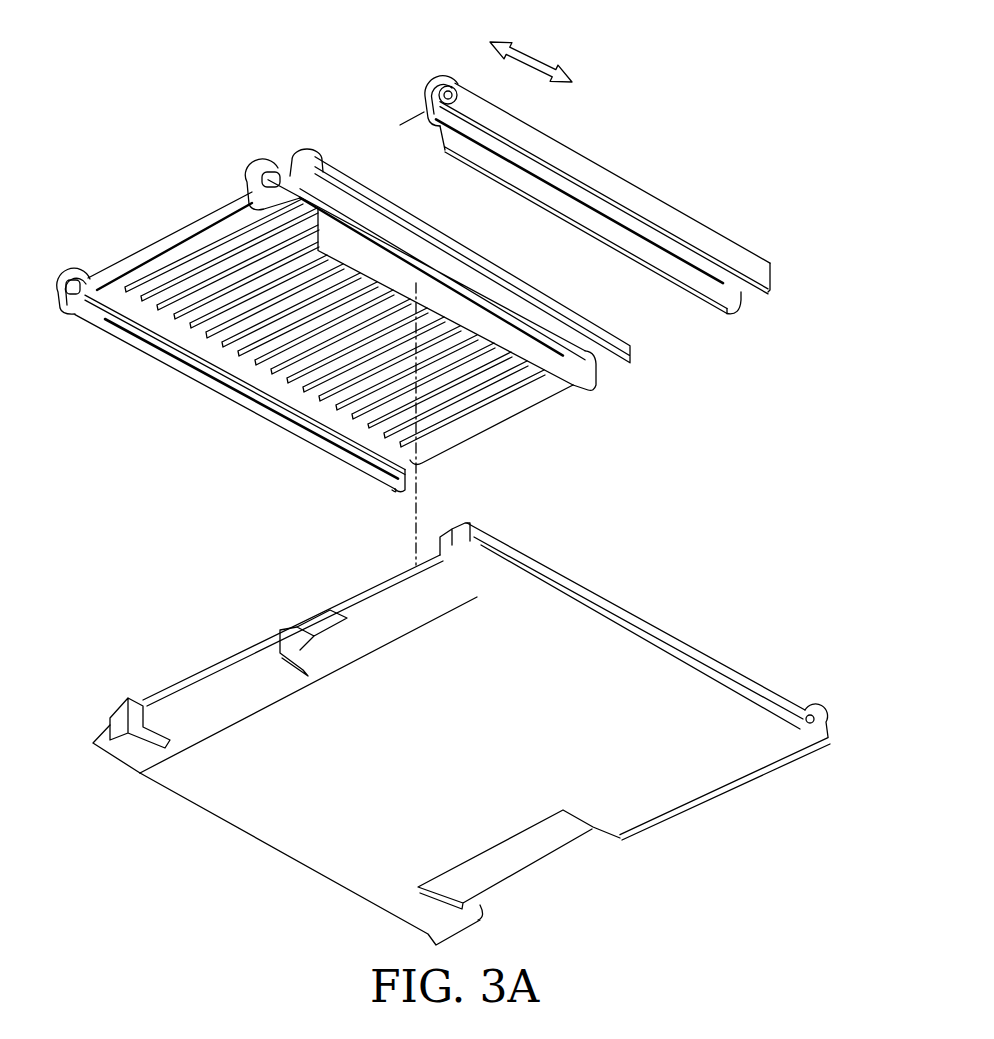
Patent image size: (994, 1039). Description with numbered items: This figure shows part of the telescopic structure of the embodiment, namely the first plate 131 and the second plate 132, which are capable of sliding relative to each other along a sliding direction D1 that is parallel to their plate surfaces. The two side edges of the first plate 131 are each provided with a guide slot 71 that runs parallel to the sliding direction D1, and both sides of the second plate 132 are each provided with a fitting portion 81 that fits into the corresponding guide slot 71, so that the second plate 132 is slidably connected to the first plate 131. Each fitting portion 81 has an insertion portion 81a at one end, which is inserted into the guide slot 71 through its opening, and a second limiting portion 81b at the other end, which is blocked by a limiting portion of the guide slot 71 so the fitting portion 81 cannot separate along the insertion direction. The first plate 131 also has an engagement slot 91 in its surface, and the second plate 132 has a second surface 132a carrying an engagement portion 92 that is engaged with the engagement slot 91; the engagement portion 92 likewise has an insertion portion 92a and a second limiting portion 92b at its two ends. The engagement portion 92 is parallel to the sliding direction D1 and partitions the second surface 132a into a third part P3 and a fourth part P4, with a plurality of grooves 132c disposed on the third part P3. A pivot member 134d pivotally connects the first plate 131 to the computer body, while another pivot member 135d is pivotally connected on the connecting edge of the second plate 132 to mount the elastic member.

The second plate 132 is at (413, 305).
The first plate 131 is at (447, 723).
The fitting portion 81 is at (666, 200).
The insertion portion 81a is at (434, 136).
The second limiting portion 81b is at (737, 316).
The engagement portion 92 is at (454, 290).
The insertion portion 92a is at (302, 208).
The second limiting portion 92b is at (591, 393).
The grooves 132c is at (197, 258).
The second surface 132a is at (693, 373).
The pivot member 135d is at (348, 142).
The pivot member 134d is at (530, 870).
The guide slot 71 is at (108, 725).
The engagement slot 91 is at (292, 622).
The third part P3 is at (478, 416).
The fourth part P4 is at (652, 312).
The sliding direction D1 is at (560, 42).